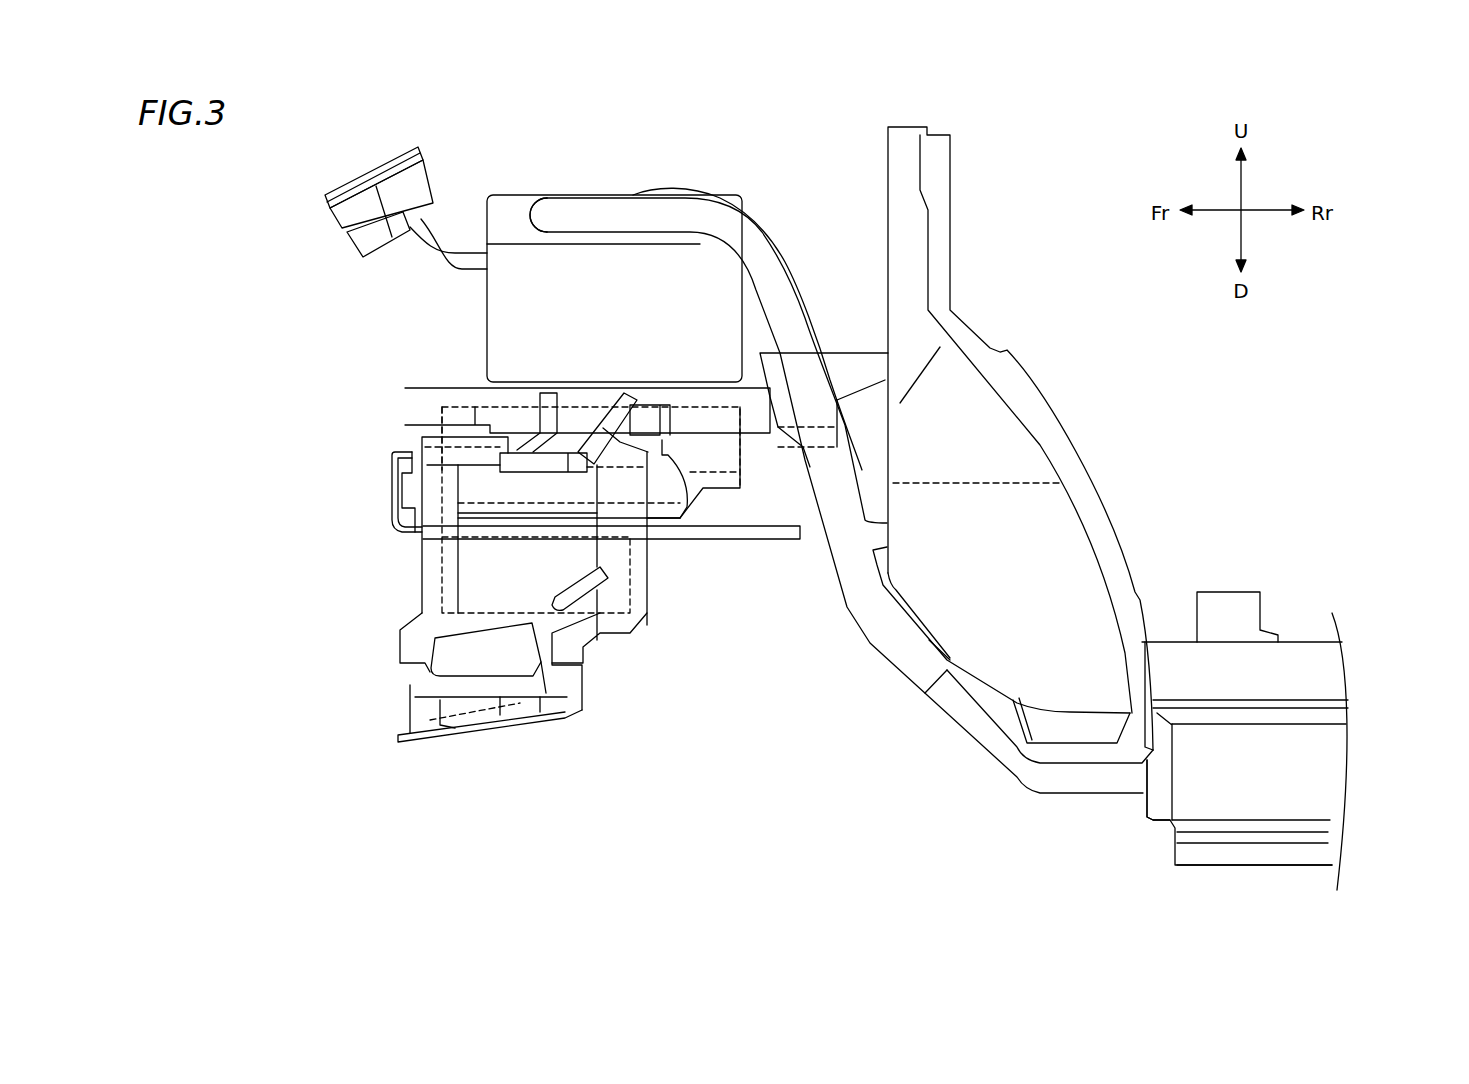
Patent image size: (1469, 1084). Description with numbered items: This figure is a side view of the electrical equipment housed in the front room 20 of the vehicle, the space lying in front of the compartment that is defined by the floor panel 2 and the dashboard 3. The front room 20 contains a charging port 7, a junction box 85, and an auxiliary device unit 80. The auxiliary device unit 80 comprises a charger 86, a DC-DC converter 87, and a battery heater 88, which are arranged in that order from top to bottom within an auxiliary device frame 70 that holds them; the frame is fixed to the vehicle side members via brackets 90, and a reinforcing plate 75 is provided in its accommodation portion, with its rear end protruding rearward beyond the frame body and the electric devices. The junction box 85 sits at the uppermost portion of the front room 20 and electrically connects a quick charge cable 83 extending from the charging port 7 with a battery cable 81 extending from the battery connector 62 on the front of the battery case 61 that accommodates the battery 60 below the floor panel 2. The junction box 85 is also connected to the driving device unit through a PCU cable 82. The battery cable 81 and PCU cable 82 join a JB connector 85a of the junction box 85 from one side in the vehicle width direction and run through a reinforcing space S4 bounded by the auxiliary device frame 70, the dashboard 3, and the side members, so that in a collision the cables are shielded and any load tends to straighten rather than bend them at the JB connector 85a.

The floor panel 2 is at (1300, 636).
The dashboard 3 is at (886, 165).
The charging port 7 is at (381, 150).
The front room 20 is at (767, 153).
The battery 60 is at (1340, 762).
The battery case 61 is at (1300, 868).
The battery connector 62 is at (1143, 808).
The auxiliary device frame 70 is at (650, 611).
The reinforcing plate 75 is at (783, 543).
The auxiliary device unit 80 is at (328, 360).
The battery cable 81 is at (705, 215).
The PCU cable 82 is at (685, 185).
The quick charge cable 83 is at (436, 268).
The junction box 85 is at (712, 277).
The JB connector 85a is at (532, 210).
The charger 86 is at (740, 457).
The DC-DC converter 87 is at (548, 562).
The battery heater 88 is at (512, 658).
The bracket 90 is at (617, 434).
The reinforcing space S4 is at (822, 587).